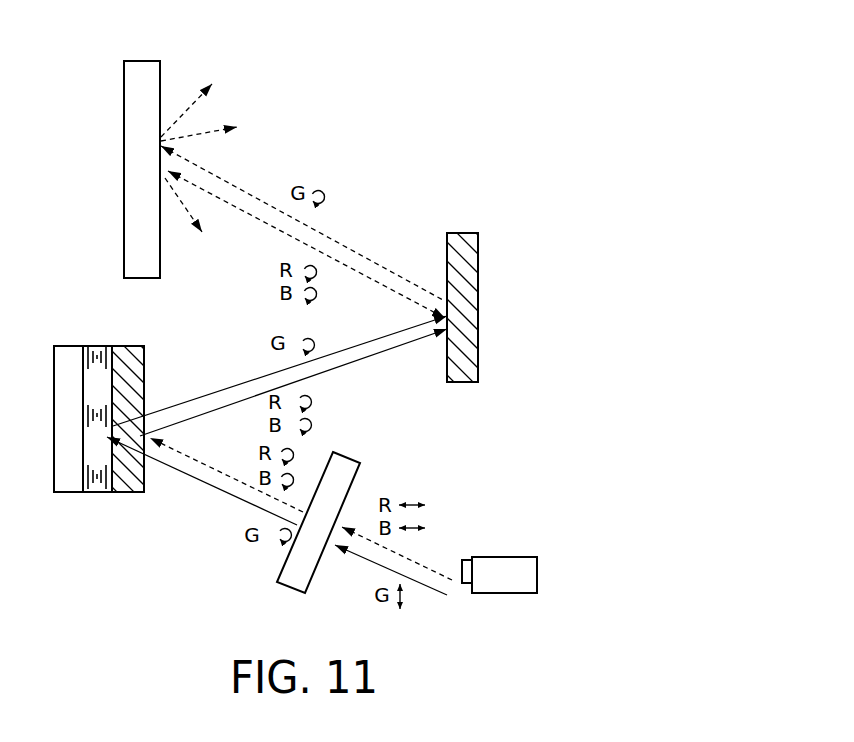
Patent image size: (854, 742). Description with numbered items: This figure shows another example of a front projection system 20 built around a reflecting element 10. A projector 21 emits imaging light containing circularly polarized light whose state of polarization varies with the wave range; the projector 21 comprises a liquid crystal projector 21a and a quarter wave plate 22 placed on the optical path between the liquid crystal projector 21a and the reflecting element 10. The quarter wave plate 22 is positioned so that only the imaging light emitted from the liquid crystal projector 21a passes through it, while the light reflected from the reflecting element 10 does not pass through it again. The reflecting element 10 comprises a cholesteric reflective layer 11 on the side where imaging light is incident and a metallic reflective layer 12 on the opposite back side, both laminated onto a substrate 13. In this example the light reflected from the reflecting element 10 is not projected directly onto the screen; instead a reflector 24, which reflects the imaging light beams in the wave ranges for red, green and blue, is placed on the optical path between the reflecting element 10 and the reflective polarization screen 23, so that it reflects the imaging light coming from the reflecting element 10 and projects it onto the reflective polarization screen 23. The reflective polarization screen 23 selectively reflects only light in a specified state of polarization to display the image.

The reflecting element 10 is at (92, 277).
The cholesteric reflective layer 11 is at (106, 354).
The metallic reflective layer 12 is at (132, 354).
The substrate 13 is at (71, 354).
The projection system 20 is at (384, 142).
The projector 21 is at (382, 424).
The liquid crystal projector 21a is at (504, 557).
The quarter wave plate 22 is at (349, 455).
The reflective polarization screen 23 is at (143, 61).
The reflector 24 is at (460, 235).